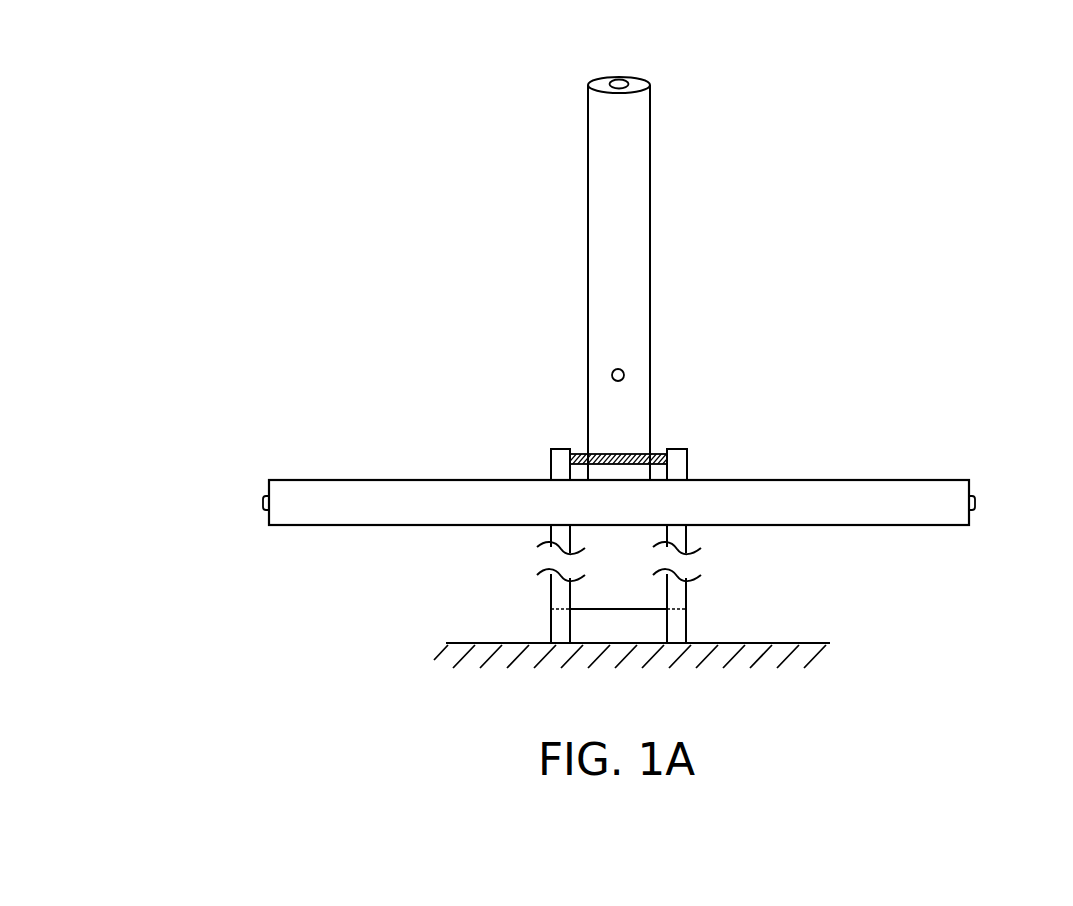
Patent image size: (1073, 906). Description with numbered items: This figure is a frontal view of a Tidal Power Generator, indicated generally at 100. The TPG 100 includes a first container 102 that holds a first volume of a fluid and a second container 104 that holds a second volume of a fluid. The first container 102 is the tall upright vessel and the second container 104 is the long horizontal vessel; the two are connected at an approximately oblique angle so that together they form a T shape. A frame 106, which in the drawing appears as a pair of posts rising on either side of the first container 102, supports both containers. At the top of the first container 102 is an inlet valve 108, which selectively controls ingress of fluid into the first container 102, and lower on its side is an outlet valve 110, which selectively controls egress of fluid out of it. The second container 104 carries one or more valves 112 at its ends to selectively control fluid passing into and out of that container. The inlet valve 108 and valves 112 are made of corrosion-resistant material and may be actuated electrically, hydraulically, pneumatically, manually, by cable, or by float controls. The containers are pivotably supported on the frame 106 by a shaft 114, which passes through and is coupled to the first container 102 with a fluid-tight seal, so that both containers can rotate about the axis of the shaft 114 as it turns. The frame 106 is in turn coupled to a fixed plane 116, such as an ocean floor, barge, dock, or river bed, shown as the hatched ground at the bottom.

The Tidal Power Generator 100 is at (250, 281).
The first container 102 is at (597, 230).
The second container 104 is at (398, 500).
The frame 106 is at (553, 462).
The inlet valve 108 is at (620, 83).
The outlet valve 110 is at (624, 370).
The valves 112 is at (264, 501).
The shaft 114 is at (655, 455).
The fixed plane 116 is at (780, 643).